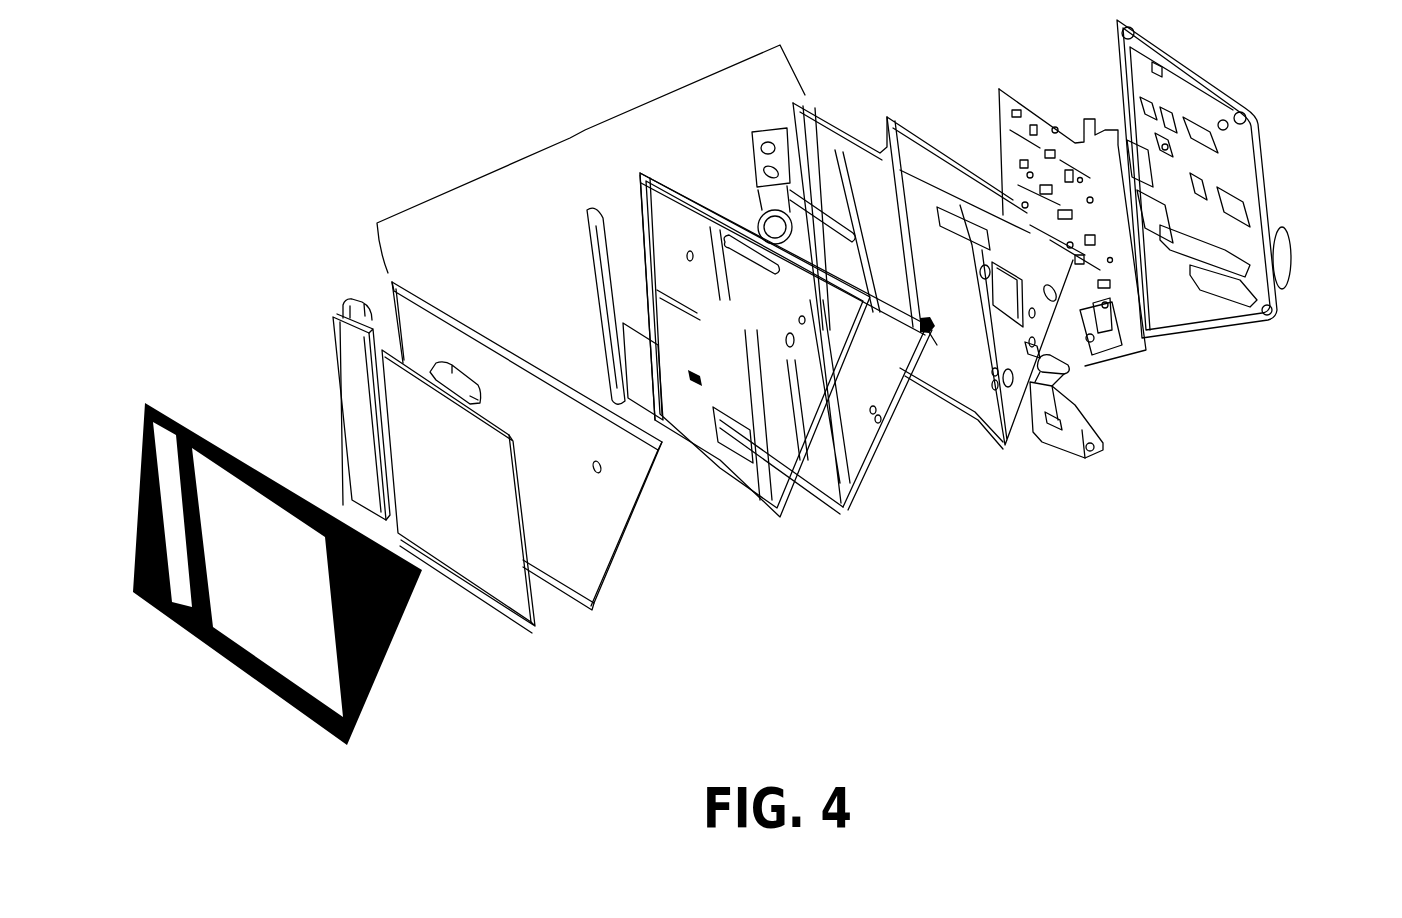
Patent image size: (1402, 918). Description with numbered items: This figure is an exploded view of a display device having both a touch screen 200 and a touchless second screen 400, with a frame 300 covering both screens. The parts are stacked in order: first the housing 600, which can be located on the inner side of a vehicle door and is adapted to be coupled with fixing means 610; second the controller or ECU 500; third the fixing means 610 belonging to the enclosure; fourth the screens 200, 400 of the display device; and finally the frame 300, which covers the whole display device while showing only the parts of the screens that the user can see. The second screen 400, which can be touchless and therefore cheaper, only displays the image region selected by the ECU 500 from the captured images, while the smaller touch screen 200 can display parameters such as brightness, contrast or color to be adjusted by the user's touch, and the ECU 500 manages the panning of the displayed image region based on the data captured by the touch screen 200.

The touch screen 200 is at (352, 413).
The frame 300 is at (375, 643).
The second screen 400 is at (485, 545).
The ECU 500 is at (1135, 393).
The housing 600 is at (1243, 345).
The fixing means 610 is at (570, 137).